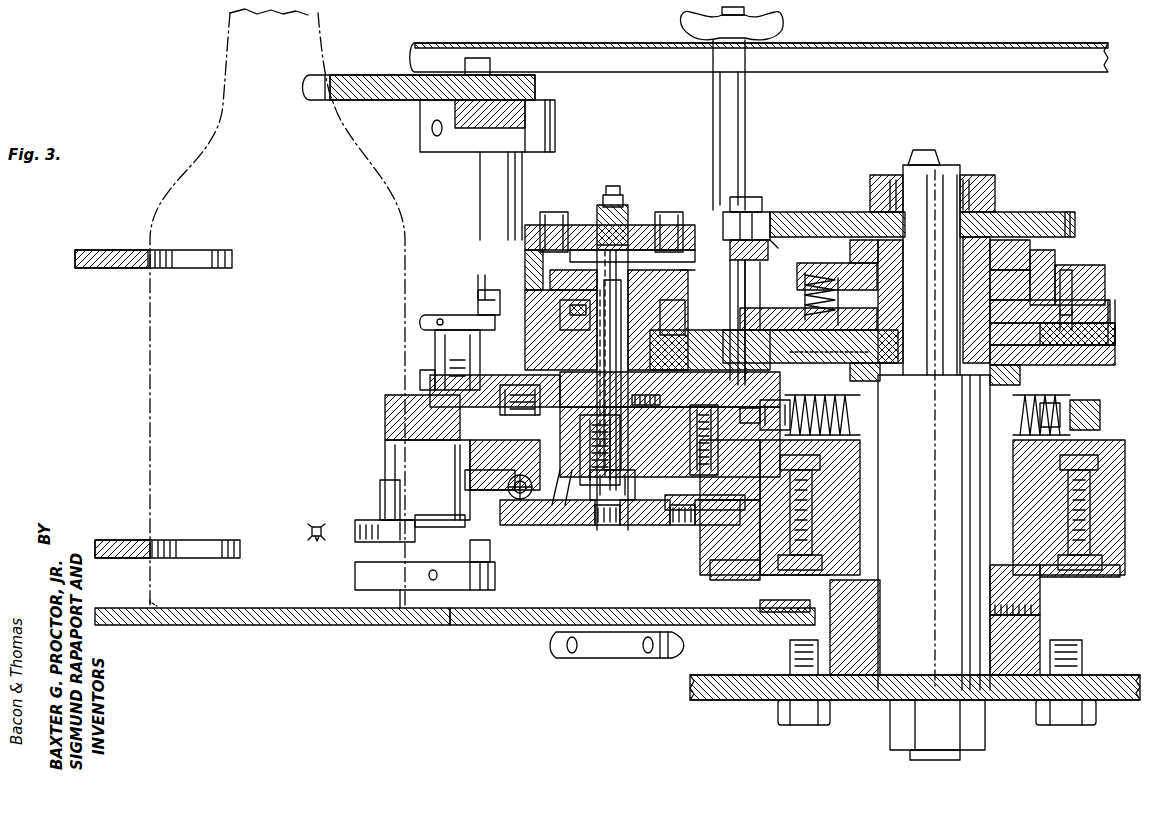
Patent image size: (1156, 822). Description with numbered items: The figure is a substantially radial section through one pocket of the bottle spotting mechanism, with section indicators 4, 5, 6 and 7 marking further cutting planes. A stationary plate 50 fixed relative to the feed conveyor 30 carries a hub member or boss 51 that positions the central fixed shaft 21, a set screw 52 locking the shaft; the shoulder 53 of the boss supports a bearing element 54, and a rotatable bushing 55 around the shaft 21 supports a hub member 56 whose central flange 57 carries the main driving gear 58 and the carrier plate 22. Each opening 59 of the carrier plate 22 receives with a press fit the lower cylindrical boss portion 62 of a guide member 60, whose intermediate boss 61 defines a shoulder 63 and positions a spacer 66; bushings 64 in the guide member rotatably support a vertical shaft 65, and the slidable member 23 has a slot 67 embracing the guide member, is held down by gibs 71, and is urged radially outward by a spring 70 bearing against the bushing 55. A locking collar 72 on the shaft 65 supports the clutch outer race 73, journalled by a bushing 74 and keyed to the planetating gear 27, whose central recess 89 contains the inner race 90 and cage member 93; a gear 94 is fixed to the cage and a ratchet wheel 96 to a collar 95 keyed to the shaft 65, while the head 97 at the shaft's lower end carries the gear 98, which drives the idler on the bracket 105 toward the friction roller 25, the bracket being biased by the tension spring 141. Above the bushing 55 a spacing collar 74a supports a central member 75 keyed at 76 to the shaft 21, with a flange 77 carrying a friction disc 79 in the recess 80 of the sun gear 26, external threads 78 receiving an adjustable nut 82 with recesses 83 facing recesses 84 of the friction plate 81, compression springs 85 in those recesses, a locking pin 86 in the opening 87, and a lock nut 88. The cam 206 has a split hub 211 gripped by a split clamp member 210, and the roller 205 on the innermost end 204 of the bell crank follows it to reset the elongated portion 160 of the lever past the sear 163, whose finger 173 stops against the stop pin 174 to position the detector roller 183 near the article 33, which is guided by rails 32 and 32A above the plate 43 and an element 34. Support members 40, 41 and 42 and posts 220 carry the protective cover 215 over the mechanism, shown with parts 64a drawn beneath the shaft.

The section line 4- 4 is at (330, 74).
The section line 5- 5 is at (490, 290).
The section line 6- 6 is at (440, 368).
The section line 7- 7 is at (440, 465).
The central fixed shaft 21 is at (950, 165).
The carrier plate 22 is at (792, 455).
The radially slidable member 23 is at (395, 412).
The friction roller 25 is at (338, 570).
The sun gear 26 is at (760, 300).
The planetating gear 27 is at (735, 300).
The feed conveyor 30 is at (598, 612).
The guide rail 32 is at (102, 262).
The second guide rail 32A is at (128, 545).
The article 33 is at (398, 240).
The stop pin 34 is at (300, 535).
The post 40 is at (522, 200).
The bracket block 41 is at (555, 118).
The arm 42 is at (405, 78).
The plate 43 is at (340, 627).
The plate 50 is at (745, 700).
The hub member or boss 51 is at (1040, 635).
The set screw 52 is at (1040, 600).
The shoulder 53 is at (822, 583).
The bearing element 54 is at (1045, 580).
The rotatable bushing 55 is at (1010, 440).
The hub member 56 is at (1095, 522).
The central flange 57 is at (768, 526).
The gear 58 is at (740, 582).
The opening 59 is at (670, 527).
The guide member 60 is at (572, 527).
The intermediate boss 61 is at (552, 527).
The lower cylindrical boss portion 62 is at (640, 527).
The shoulder 63 is at (705, 527).
The bushing 64 is at (645, 410).
The nut 64a is at (630, 496).
The vertical shaft 65 is at (632, 210).
The spacer 66 is at (772, 443).
The slot 67 is at (775, 395).
The spring 70 is at (835, 437).
The gib 71 is at (500, 384).
The locking collar 72 is at (655, 391).
The outer race 73 is at (715, 322).
The bushing 74 is at (610, 375).
The spacing collar 74a is at (1020, 378).
The central member 75 is at (1050, 304).
The key 76 is at (905, 240).
The flange 77 is at (1090, 325).
The external threads 78 is at (1010, 270).
The friction disc 79 is at (1085, 365).
The recess 80 is at (808, 376).
The friction plate 81 is at (1110, 305).
The adjustable nut 82 is at (1105, 256).
The recess 83 is at (820, 270).
The recess 84 is at (862, 300).
The compression spring 85 is at (800, 306).
The locking pin 86 is at (1060, 240).
The opening 87 is at (1070, 308).
The lock nut 88 is at (1005, 240).
The central recess 89 is at (692, 257).
The inner race 90 is at (660, 268).
The cage member 93 is at (560, 262).
The gear 94 is at (525, 268).
The collar 95 is at (655, 228).
The ratchet wheel 96 is at (688, 225).
The head or flange 97 is at (600, 527).
The gear 98 is at (740, 505).
The bracket 105 is at (486, 468).
The tension spring 141 is at (508, 488).
The elongated portion 160 is at (490, 296).
The sear 163 is at (478, 302).
The finger 173 is at (525, 330).
The stop pin 174 is at (435, 348).
The roller 183 is at (405, 546).
The innermost end 204 is at (789, 241).
The roller 205 is at (770, 212).
The cam 206 is at (835, 212).
The split clamp member 210 is at (995, 185).
The split hub 211 is at (895, 175).
The protective cover 215 is at (928, 43).
The post 220 is at (740, 147).